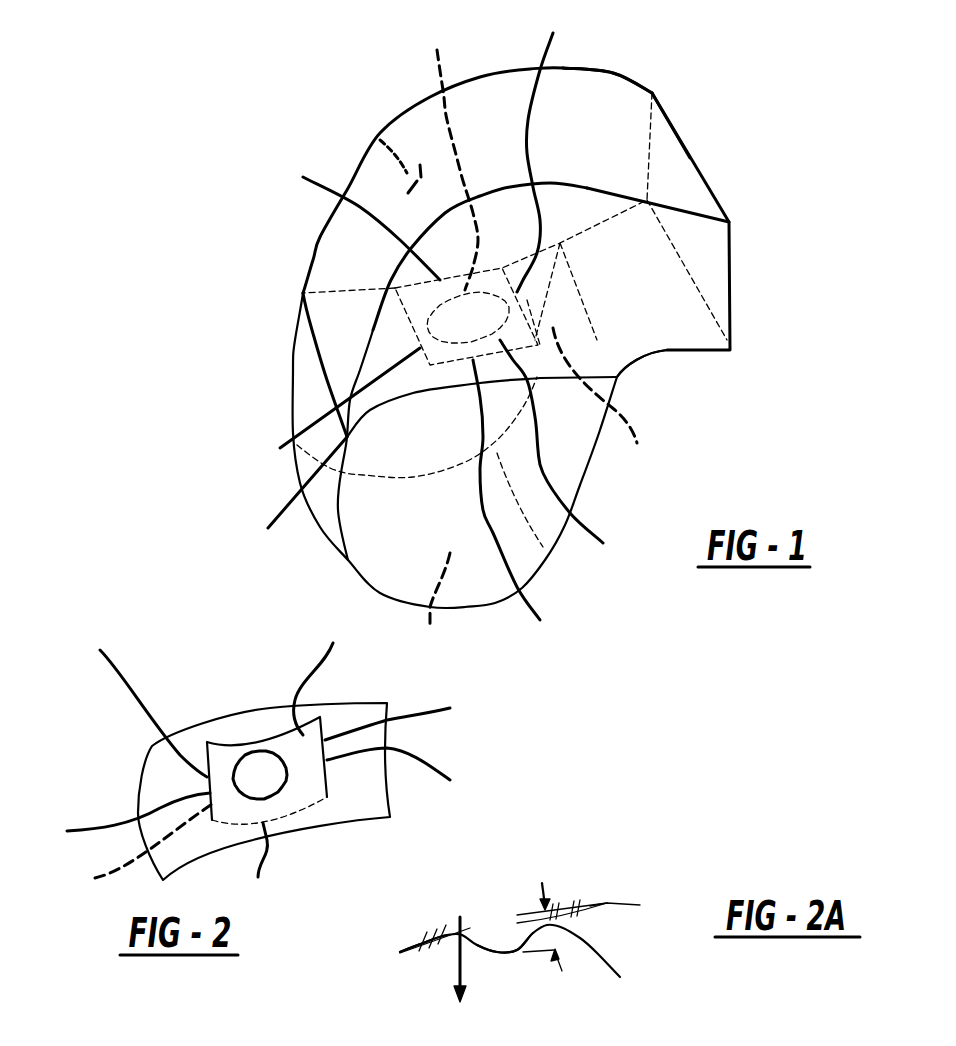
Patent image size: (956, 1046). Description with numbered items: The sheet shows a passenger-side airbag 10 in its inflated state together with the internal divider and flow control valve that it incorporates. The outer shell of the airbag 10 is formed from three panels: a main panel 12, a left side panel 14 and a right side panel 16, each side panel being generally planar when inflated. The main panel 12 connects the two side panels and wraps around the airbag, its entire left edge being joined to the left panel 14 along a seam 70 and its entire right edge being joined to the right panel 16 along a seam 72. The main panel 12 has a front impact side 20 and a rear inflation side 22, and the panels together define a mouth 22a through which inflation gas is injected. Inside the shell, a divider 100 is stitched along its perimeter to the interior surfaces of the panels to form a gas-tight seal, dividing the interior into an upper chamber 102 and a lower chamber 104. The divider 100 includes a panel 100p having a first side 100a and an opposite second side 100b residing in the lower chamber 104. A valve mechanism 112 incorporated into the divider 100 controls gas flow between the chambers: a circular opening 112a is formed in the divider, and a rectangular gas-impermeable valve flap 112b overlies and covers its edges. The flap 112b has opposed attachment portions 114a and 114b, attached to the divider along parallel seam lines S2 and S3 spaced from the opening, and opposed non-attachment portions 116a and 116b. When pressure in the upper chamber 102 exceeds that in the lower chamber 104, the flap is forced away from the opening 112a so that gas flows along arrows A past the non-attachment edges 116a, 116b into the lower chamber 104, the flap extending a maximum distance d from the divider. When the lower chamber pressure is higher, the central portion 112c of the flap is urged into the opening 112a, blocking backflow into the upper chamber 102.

In FIG. 1, the passenger-side airbag 10 is at (822, 118).
In FIG. 1, the main panel 12 is at (350, 243).
In FIG. 1, the left side panel 14 is at (380, 140).
In FIG. 1, the right side panel 16 is at (652, 322).
In FIG. 1, the front impact side 20 is at (320, 323).
In FIG. 1, the rear inflation side 22 is at (720, 240).
In FIG. 1, the mouth 22a is at (733, 290).
In FIG. 1, the seam 70 is at (610, 72).
In FIG. 1, the seam 72 is at (590, 187).
In FIG. 1, the divider 100 is at (343, 373).
In FIG. 2, the divider 100 is at (157, 797).
In FIG. 2A, the divider 100 is at (607, 903).
In FIG. 1, the first side 100a is at (313, 363).
In FIG. 2A, the first side 100a is at (402, 952).
In FIG. 2A, the second side 100b is at (628, 905).
In FIG. 1, the panel 100p is at (282, 447).
In FIG. 1, the upper chamber 102 is at (608, 400).
In FIG. 1, the lower chamber 104 is at (431, 604).
In FIG. 1, the valve mechanism 112 is at (568, 433).
In FIG. 2, the valve mechanism 112 is at (290, 793).
In FIG. 2A, the valve mechanism 112 is at (497, 930).
In FIG. 1, the circular opening 112a is at (448, 158).
In FIG. 2, the circular opening 112a is at (247, 753).
In FIG. 2A, the circular opening 112a is at (602, 963).
In FIG. 2, the valve flap 112b is at (128, 845).
In FIG. 2A, the valve flap 112b is at (517, 952).
In FIG. 2A, the central portion 112c is at (493, 954).
In FIG. 1, the attachment portion 114a is at (288, 497).
In FIG. 2, the attachment portion 114a is at (138, 698).
In FIG. 1, the attachment portion 114b is at (550, 147).
In FIG. 2, the attachment portion 114b is at (413, 770).
In FIG. 1, the non-attachment portion 116a is at (347, 214).
In FIG. 2, the non-attachment portion 116a is at (319, 674).
In FIG. 1, the non-attachment portion 116b is at (530, 501).
In FIG. 2, the non-attachment portion 116b is at (262, 866).
In FIG. 2, the seam line S2 is at (124, 816).
In FIG. 2, the seam line S3 is at (402, 716).
In FIG. 2A, the arrows A is at (444, 963).
In FIG. 2A, the maximum distance d is at (550, 967).